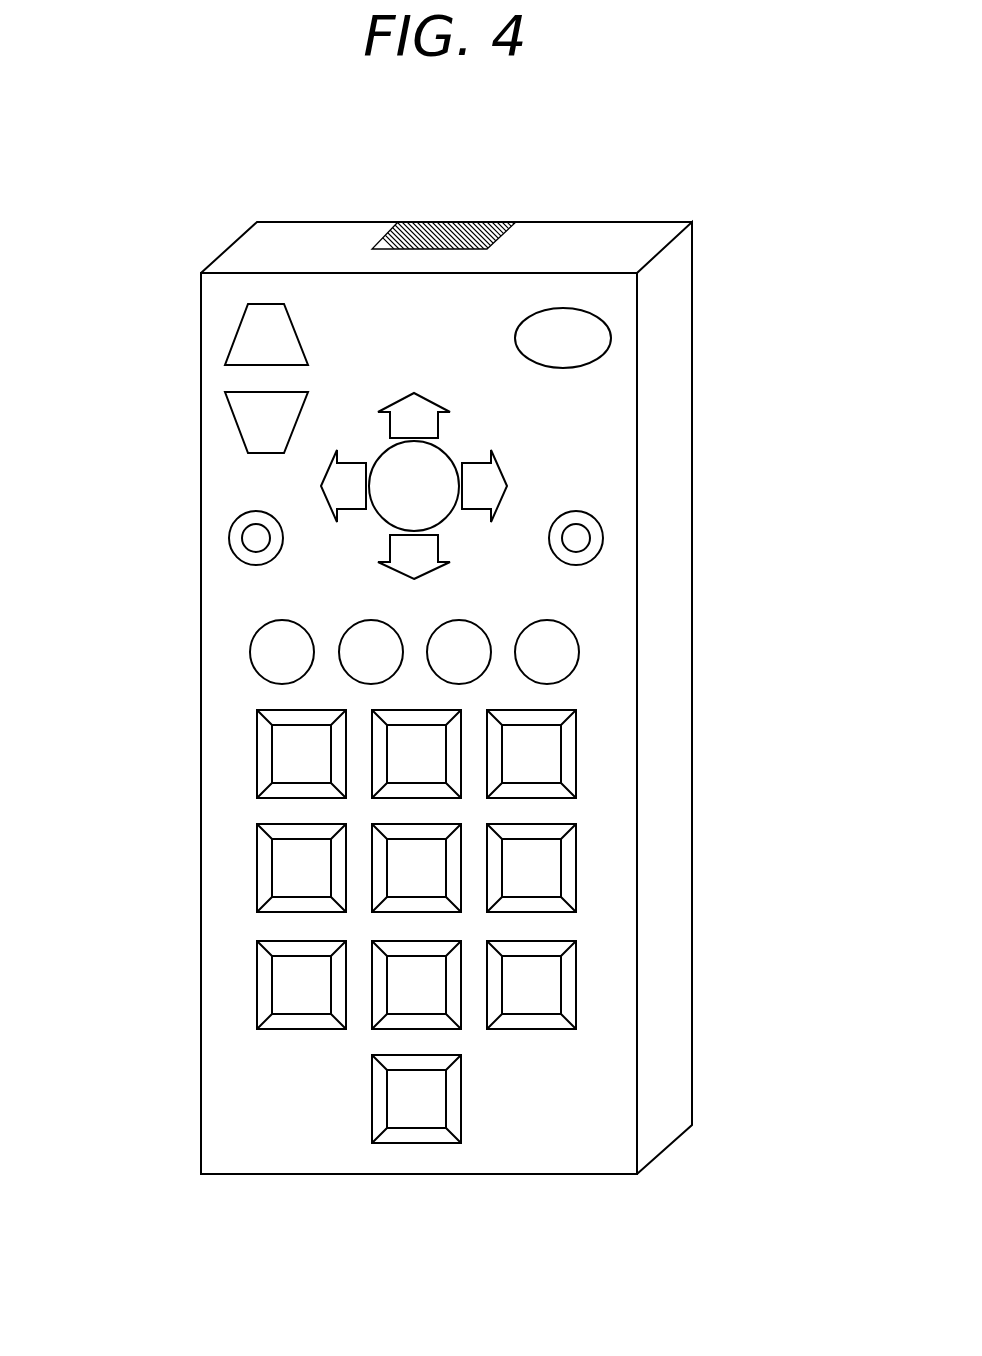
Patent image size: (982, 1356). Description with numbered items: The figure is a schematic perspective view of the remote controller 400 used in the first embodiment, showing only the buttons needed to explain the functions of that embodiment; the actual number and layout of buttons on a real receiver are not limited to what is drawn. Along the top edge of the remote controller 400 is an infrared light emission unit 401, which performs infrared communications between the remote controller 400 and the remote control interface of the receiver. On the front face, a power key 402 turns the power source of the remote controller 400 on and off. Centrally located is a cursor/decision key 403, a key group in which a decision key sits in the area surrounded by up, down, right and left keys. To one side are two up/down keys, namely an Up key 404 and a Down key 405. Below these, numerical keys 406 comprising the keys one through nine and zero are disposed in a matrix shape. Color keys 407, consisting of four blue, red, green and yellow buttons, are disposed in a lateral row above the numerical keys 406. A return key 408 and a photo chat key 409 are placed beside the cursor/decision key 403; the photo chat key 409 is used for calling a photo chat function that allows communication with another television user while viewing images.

The remote controller 400 is at (669, 195).
The infrared light emission unit 401 is at (448, 227).
The power key 402 is at (612, 333).
The cursor/decision key 403 is at (503, 465).
The Up key 404 is at (237, 330).
The Down key 405 is at (242, 442).
The numerical keys 406 is at (257, 743).
The color keys 407 is at (250, 650).
The return button 408 is at (230, 525).
The photo chat key 409 is at (603, 533).